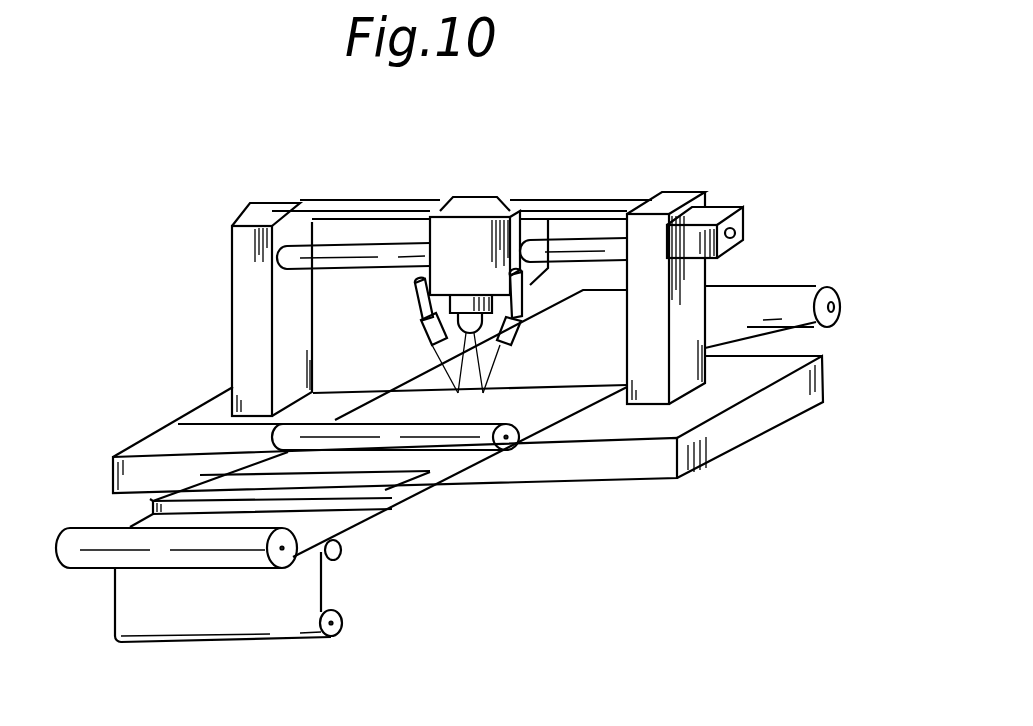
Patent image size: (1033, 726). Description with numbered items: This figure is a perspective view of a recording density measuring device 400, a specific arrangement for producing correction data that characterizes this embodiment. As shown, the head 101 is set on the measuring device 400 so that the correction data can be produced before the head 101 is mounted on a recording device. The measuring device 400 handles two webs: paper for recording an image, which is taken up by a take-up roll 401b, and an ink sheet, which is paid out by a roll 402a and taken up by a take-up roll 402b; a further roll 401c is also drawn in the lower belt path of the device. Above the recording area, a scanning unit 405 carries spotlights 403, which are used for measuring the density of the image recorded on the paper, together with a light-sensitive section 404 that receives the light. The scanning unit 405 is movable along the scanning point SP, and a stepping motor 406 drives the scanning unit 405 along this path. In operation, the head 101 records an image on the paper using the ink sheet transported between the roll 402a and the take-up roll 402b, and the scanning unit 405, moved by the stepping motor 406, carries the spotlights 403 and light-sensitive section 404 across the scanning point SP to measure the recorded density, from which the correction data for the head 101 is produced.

The recording density measuring device 400 is at (251, 203).
The light-sensitive section 404 is at (468, 315).
The scanning unit 405 is at (473, 235).
The stepping motor 406 is at (712, 220).
The take-up roll 401b is at (830, 290).
The conveyor roller 401c is at (340, 618).
The roll 402a is at (75, 560).
The take-up roll 402b is at (503, 457).
The spotlights 403 is at (428, 338).
The head 101 is at (205, 485).
The scanning point SP is at (468, 423).